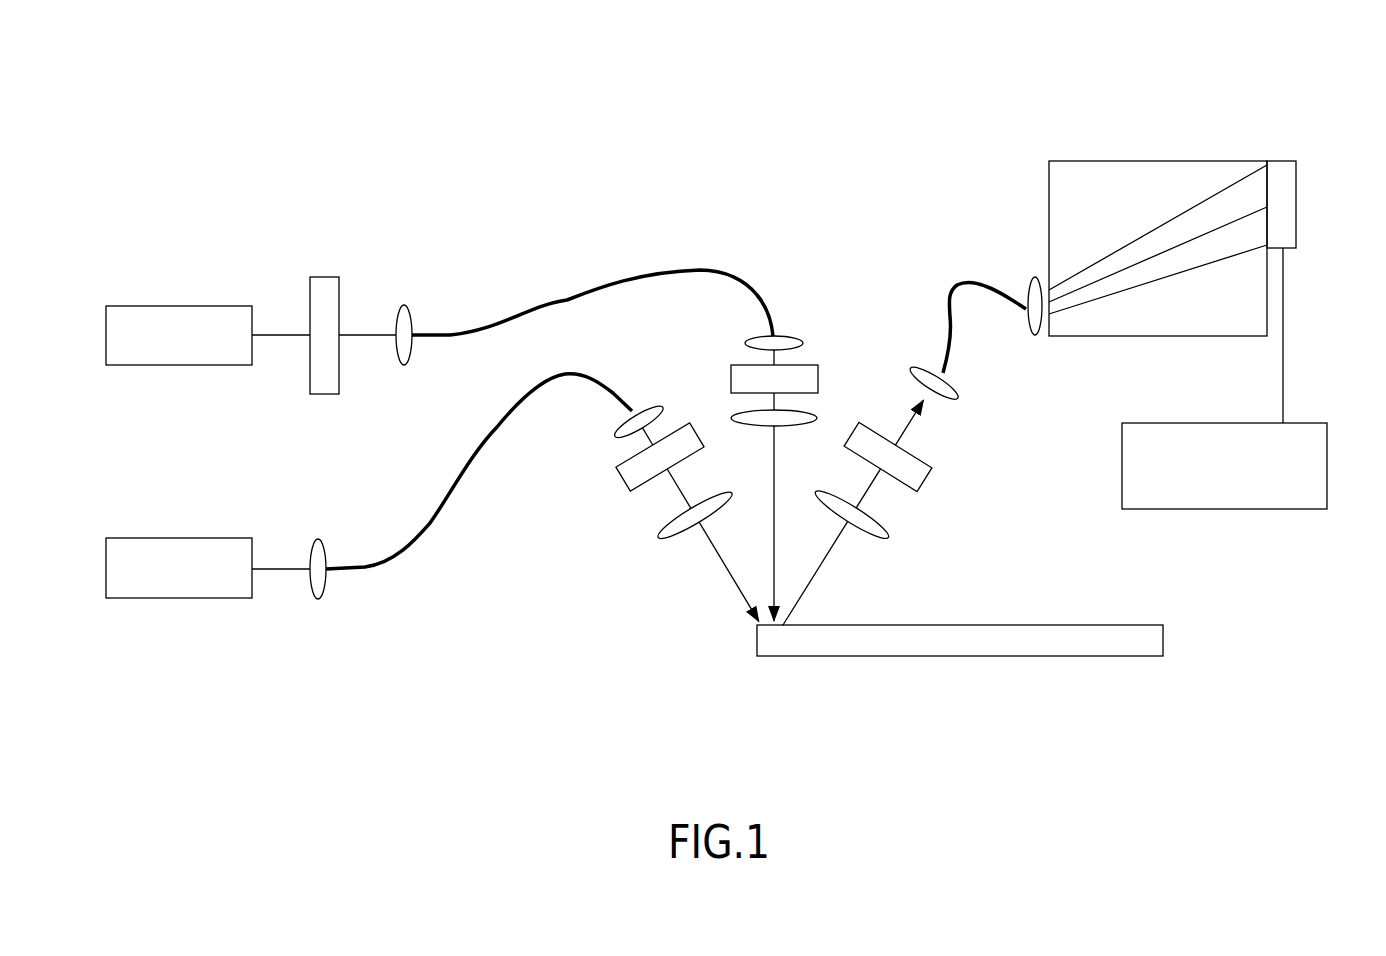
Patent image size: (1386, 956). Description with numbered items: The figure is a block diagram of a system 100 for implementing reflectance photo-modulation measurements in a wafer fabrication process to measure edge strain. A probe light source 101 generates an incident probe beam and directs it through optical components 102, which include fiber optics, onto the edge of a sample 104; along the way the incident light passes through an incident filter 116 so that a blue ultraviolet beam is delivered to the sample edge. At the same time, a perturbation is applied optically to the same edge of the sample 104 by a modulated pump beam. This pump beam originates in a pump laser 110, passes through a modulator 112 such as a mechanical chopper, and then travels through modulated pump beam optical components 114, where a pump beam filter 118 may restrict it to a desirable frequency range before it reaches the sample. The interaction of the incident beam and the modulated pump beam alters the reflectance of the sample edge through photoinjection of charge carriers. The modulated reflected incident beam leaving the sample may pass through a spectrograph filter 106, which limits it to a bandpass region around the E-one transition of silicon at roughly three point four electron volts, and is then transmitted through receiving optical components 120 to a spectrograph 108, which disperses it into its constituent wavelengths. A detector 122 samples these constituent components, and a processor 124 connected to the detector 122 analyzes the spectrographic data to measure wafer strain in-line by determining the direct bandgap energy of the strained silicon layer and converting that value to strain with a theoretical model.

The system 100 is at (329, 60).
The probe light source 101 is at (197, 580).
The optical components 102 is at (467, 519).
The sample 104 is at (1122, 624).
The spectrograph filter 106 is at (928, 482).
The spectrograph 108 is at (1078, 160).
The pump laser 110 is at (197, 347).
The modulator 112 is at (326, 276).
The modulated pump beam optical components 114 is at (678, 242).
The incident filter 116 is at (625, 482).
The pump beam filter 118 is at (810, 362).
The receiving optical components 120 is at (955, 283).
The detector 122 is at (1285, 160).
The processor 124 is at (1244, 479).